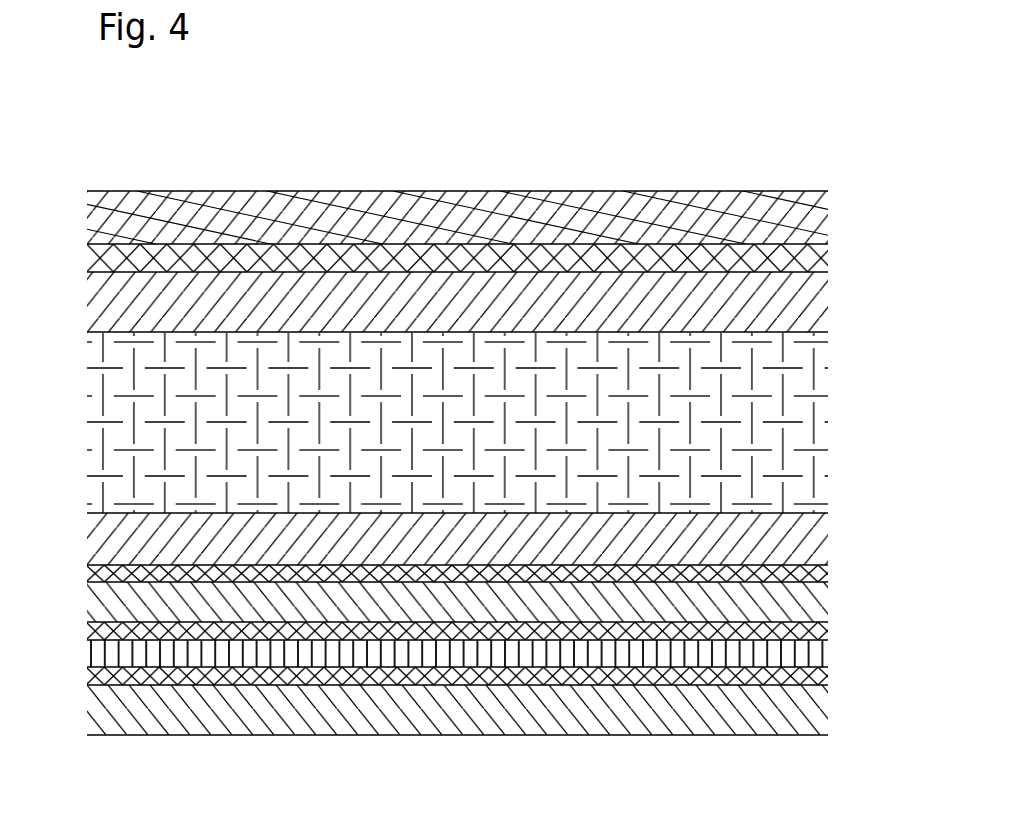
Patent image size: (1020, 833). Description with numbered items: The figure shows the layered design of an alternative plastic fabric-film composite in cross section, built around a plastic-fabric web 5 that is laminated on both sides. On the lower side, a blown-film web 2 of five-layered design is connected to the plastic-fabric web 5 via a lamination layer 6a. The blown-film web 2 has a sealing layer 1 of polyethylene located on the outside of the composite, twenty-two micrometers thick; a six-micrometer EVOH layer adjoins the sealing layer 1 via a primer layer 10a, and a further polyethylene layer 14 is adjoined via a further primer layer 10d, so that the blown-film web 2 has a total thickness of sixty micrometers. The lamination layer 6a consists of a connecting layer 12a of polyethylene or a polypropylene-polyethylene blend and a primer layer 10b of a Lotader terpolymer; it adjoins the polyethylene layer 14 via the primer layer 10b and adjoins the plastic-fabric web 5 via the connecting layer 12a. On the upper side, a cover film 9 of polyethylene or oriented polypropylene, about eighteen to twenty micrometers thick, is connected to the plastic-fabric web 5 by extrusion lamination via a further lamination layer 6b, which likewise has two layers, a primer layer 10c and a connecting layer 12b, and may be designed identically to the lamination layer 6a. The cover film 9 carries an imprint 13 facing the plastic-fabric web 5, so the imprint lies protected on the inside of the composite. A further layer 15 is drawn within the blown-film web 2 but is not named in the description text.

The base layer 1 is at (682, 710).
The lower laminate 2 is at (842, 582).
The core layer 5 is at (842, 333).
The lower fiber layer 6a is at (842, 513).
The upper fiber layer 6b is at (842, 244).
The top cover layer 9 is at (842, 191).
The first adhesive layer 10a is at (562, 670).
The second adhesive layer 10b is at (325, 573).
The third adhesive layer 10c is at (543, 257).
The fourth adhesive layer 10d is at (413, 637).
The lower bonding layer 12a is at (115, 553).
The upper bonding layer 12b is at (167, 287).
The coating layer 13 is at (318, 243).
The intermediate layer 14 is at (190, 607).
The spacer layer 15 is at (790, 660).